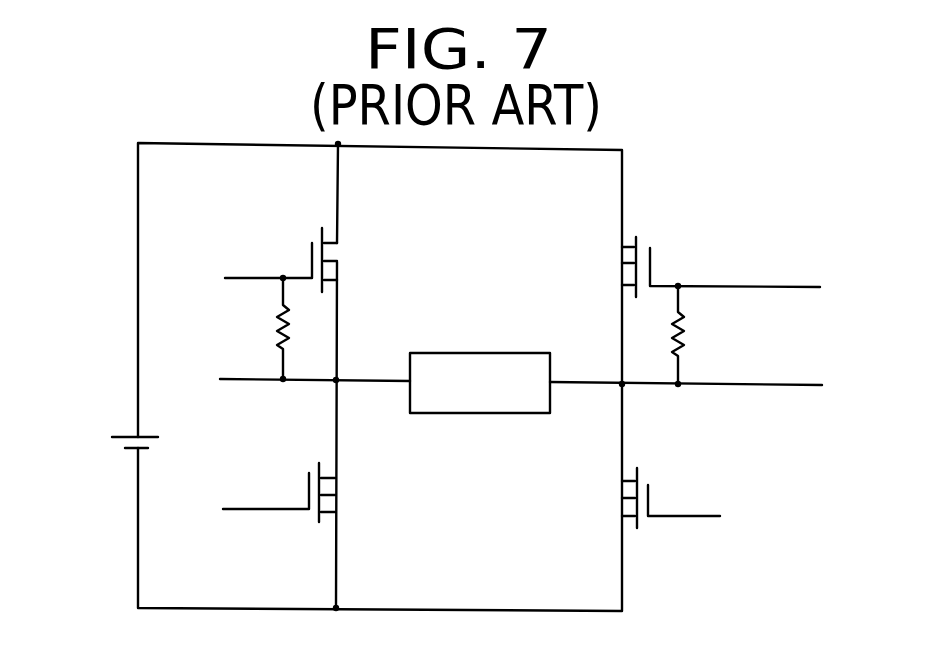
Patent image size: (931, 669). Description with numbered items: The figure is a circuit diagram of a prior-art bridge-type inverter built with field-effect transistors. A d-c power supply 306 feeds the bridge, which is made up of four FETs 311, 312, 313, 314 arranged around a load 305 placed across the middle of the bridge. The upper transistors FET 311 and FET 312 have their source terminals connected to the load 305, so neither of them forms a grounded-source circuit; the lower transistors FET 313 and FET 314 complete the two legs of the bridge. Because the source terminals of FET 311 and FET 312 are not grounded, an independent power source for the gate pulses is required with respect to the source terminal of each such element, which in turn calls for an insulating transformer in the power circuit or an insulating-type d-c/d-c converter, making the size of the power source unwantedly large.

The load 305 is at (470, 353).
The d-c power supply 306 is at (120, 434).
The FET 311 is at (645, 240).
The FET 312 is at (313, 240).
The FET 313 is at (310, 470).
The FET 314 is at (643, 477).